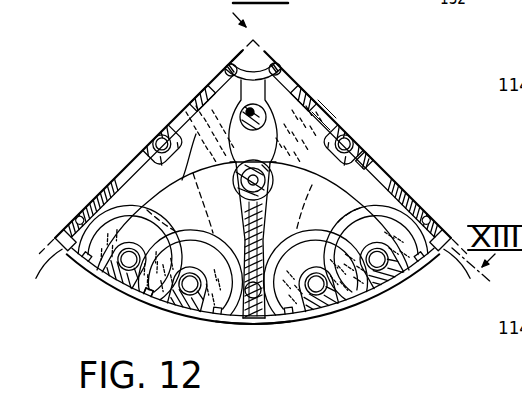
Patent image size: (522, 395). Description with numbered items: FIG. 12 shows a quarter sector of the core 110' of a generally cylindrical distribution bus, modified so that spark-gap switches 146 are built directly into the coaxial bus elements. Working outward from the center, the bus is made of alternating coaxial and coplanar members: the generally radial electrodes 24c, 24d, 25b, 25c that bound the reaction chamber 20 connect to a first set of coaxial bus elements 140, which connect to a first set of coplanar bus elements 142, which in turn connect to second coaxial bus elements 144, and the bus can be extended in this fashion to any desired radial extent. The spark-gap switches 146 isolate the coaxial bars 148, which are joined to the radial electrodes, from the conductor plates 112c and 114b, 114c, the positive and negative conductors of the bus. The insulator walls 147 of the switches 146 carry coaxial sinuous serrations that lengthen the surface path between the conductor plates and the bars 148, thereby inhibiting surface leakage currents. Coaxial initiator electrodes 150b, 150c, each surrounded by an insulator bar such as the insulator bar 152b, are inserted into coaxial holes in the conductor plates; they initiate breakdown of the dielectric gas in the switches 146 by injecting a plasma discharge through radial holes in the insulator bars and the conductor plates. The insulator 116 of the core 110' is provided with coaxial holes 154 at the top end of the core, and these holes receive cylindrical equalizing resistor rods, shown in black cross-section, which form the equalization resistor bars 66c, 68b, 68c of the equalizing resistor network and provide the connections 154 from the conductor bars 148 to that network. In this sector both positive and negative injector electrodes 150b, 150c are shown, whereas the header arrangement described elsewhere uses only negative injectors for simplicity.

The reaction chamber 20 is at (267, 43).
The radial electrode 24c is at (240, 54).
The radial electrode 24d is at (261, 356).
The radial electrode 25b is at (272, 68).
The radial electrode 25c is at (226, 68).
The equalization resistor bar 66c is at (252, 255).
The equalization resistor bar 68b is at (400, 196).
The equalization resistor bar 68c is at (106, 194).
The core 110' is at (257, 253).
The conductor plate 112c is at (263, 325).
The conductor plate 114b is at (450, 276).
The conductor plate 114c is at (56, 275).
The insulator 116 is at (147, 298).
The first set of coaxial bus elements 140 is at (373, 78).
The first set of coplanar bus elements 142 is at (368, 191).
The second coaxial bus elements 144 is at (445, 221).
The spark-gap switch 146 is at (330, 110).
The insulator wall 147 is at (326, 122).
The coaxial bar 148 is at (300, 97).
The coaxial initiator electrode 150b is at (347, 134).
The coaxial initiator electrode 150c is at (163, 140).
The insulator bar 152b is at (358, 147).
The coaxial holes 154 is at (210, 92).